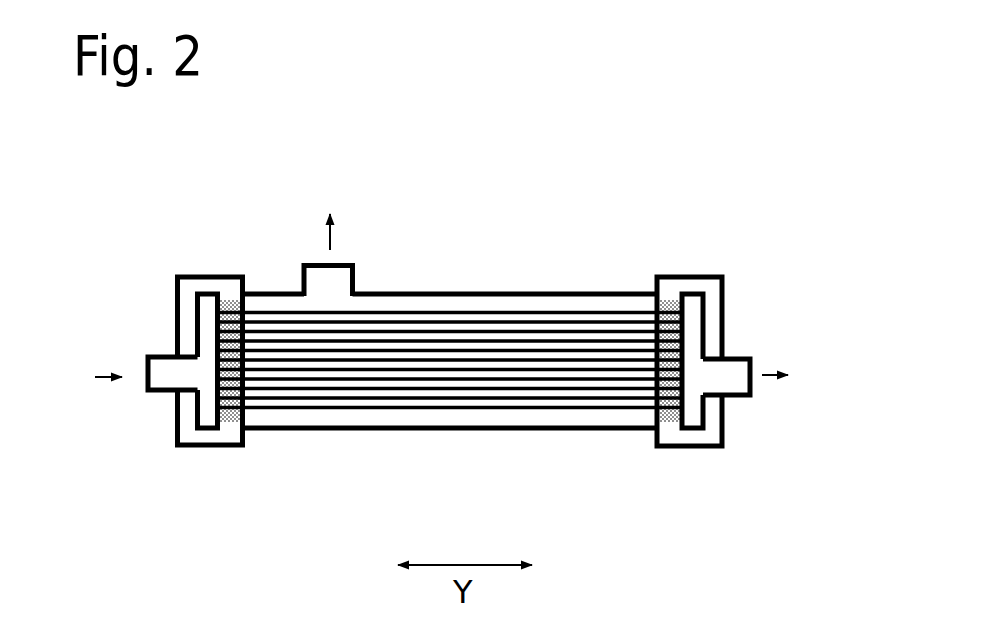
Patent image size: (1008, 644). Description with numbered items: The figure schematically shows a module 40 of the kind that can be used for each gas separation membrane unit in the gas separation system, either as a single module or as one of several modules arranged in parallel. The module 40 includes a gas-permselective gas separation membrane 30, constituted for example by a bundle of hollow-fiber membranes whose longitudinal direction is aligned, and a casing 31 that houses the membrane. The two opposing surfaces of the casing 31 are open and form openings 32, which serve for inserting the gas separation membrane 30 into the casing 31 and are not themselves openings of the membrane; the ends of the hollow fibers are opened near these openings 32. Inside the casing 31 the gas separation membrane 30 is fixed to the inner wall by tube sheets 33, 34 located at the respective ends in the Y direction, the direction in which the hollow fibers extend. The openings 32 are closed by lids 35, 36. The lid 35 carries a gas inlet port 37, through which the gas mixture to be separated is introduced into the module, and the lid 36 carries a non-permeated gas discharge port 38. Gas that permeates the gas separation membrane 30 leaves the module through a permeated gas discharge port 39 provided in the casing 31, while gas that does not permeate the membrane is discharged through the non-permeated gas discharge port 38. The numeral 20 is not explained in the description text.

The module 40 is at (535, 153).
The hollow fiber membrane 20 is at (441, 320).
The gas separation membrane 30 is at (526, 414).
The casing 31 is at (427, 432).
The openings 32 is at (197, 372).
The tube sheet 33 is at (248, 421).
The tube sheet 34 is at (650, 421).
The lid 35 is at (193, 277).
The lid 36 is at (690, 276).
The gas inlet port 37 is at (130, 405).
The non-permeated gas discharge port 38 is at (775, 340).
The permeated gas discharge port 39 is at (364, 253).